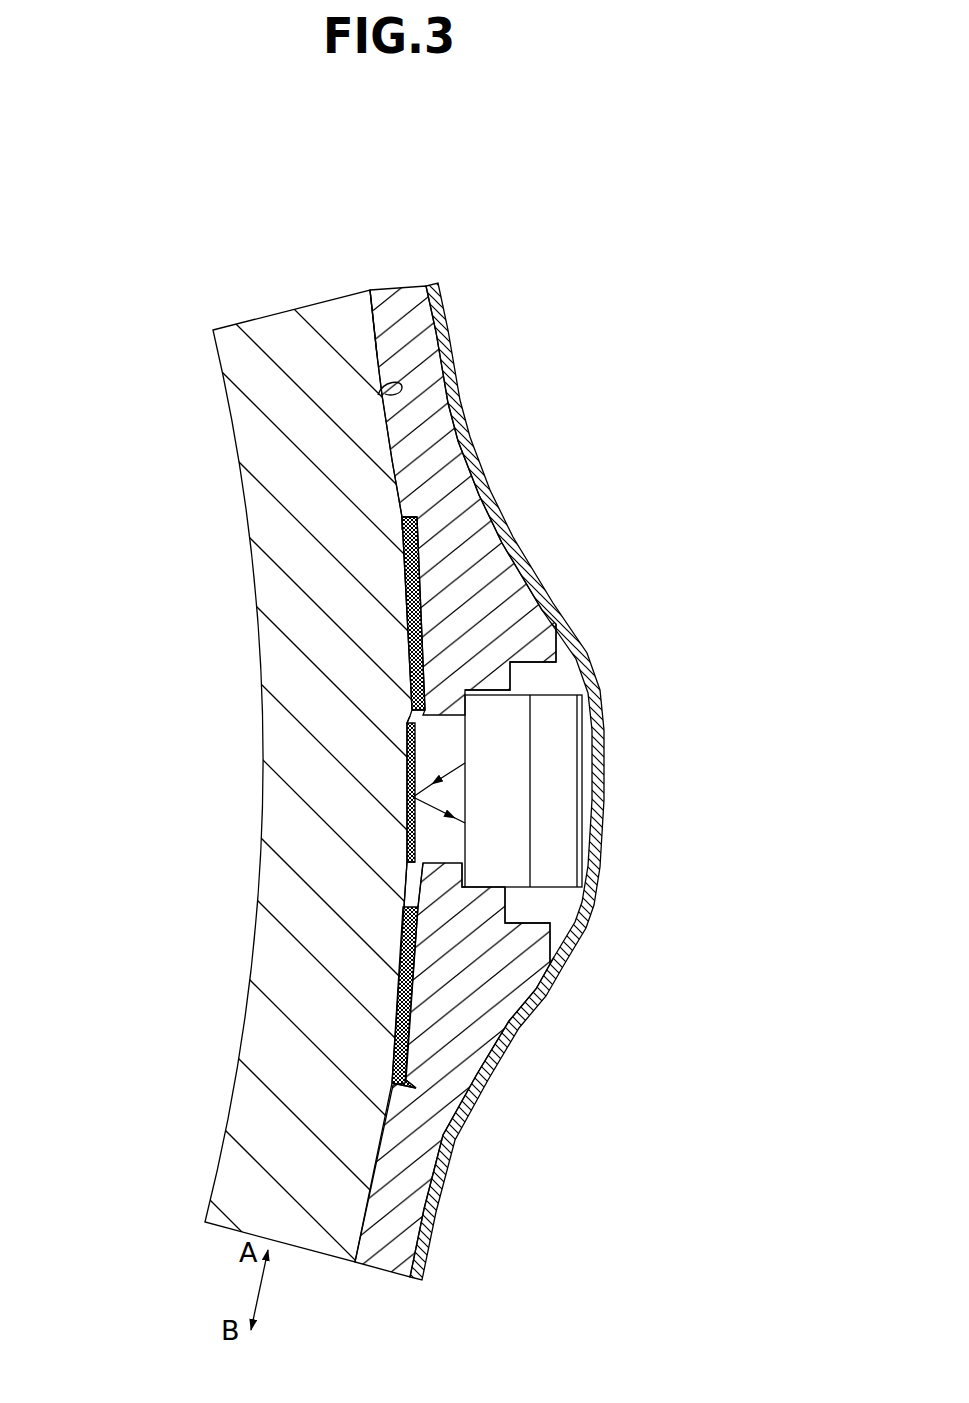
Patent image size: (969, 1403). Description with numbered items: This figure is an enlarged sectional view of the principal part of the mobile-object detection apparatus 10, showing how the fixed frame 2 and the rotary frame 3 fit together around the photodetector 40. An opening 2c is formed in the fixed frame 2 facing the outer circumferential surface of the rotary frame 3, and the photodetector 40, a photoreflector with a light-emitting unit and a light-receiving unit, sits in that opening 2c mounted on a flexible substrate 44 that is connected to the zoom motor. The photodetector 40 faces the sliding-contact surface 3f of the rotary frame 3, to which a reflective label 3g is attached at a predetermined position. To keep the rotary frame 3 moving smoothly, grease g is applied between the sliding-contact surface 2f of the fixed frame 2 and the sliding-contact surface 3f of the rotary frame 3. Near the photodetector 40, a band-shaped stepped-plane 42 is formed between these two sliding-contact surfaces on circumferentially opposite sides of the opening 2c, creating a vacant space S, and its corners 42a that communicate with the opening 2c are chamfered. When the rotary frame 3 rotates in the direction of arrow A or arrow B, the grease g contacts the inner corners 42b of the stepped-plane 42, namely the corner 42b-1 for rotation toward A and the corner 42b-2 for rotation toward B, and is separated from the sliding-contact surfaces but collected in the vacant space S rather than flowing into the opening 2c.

The mobile-object detection apparatus 10 is at (150, 268).
The fixed frame 2 is at (405, 255).
The opening 2c is at (443, 738).
The sliding-contact surface 2f is at (373, 350).
The rotary frame 3 is at (247, 523).
The sliding-contact surface 3f is at (390, 402).
The reflective label 3g is at (407, 767).
The photodetector 40 is at (557, 757).
The stepped-plane 42 is at (420, 653).
The corners 42a is at (413, 715).
The corners 42b is at (545, 780).
The corner 42b-1 is at (408, 515).
The corner 42b-2 is at (437, 1087).
The flexible substrate 44 is at (597, 930).
The grease g is at (405, 525).
The vacant space S is at (410, 905).